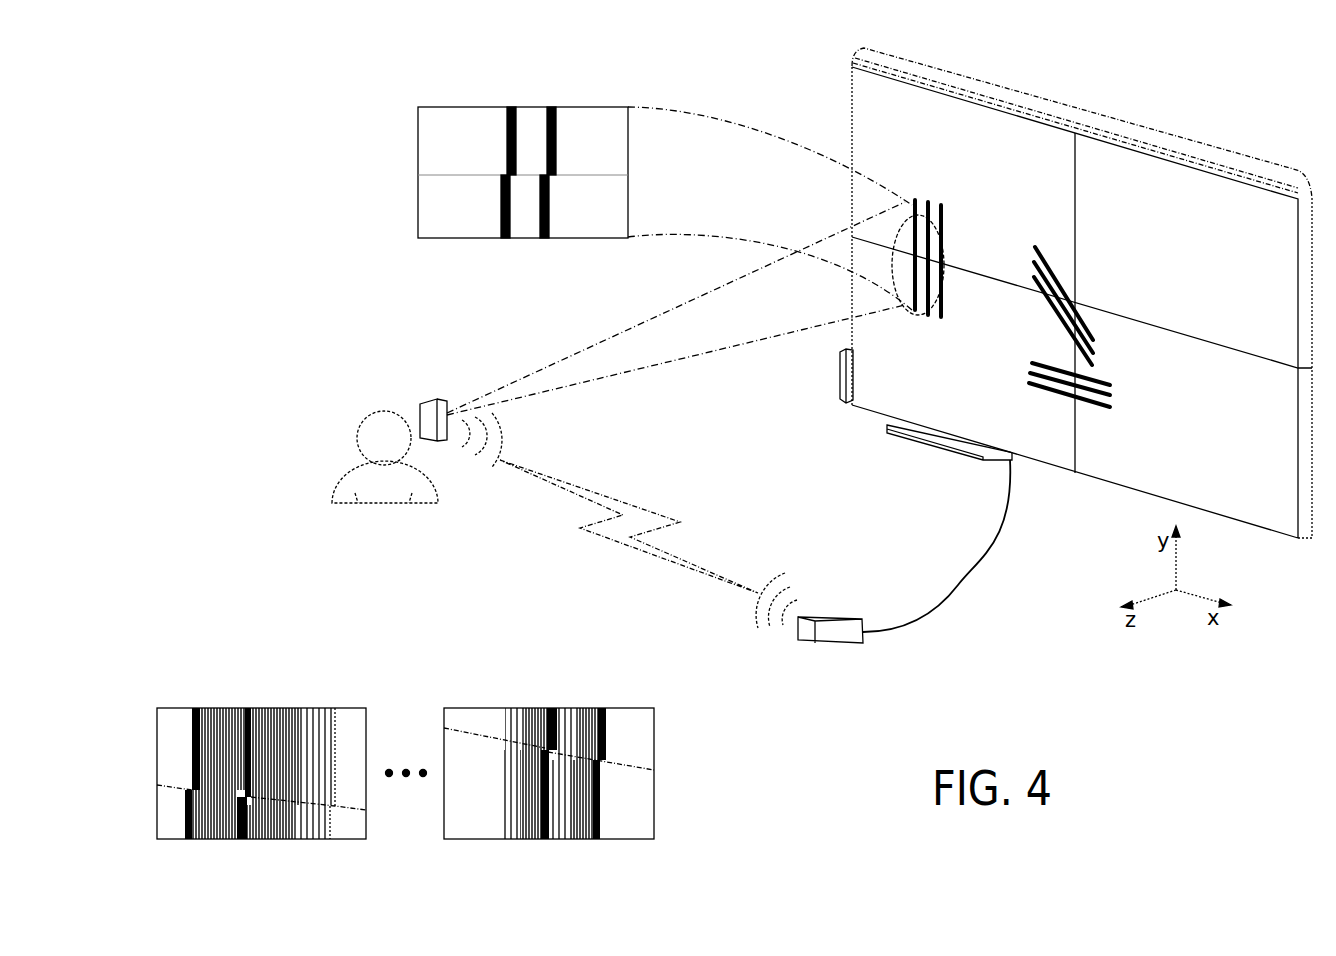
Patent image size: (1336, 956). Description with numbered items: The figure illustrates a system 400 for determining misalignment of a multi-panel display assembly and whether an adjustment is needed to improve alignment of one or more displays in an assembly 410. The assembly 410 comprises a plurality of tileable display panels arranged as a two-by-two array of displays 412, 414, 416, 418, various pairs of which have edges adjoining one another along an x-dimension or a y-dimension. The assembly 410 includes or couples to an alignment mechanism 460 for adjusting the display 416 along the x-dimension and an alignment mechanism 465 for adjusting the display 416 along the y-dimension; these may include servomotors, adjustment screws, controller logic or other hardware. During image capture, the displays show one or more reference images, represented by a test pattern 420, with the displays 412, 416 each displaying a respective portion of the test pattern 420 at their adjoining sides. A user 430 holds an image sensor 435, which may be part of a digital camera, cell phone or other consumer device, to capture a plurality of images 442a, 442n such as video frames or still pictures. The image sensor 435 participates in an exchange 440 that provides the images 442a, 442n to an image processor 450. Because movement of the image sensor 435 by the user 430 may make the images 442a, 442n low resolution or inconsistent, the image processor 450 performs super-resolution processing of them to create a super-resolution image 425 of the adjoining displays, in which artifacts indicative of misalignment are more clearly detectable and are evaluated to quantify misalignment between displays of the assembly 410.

The system 400 is at (228, 174).
The assembly 410 is at (1102, 111).
The display 412 is at (904, 144).
The display 414 is at (1288, 251).
The display 416 is at (1065, 450).
The display 418 is at (1295, 514).
The test pattern 420 is at (958, 317).
The super-resolution image 425 is at (463, 103).
The user 430 is at (338, 486).
The image sensor 435 is at (418, 404).
The exchange 440 is at (642, 555).
The image 442a is at (295, 705).
The image 442n is at (582, 705).
The image processor 450 is at (835, 643).
The alignment mechanism 460 is at (942, 445).
The alignment mechanism 465 is at (842, 372).